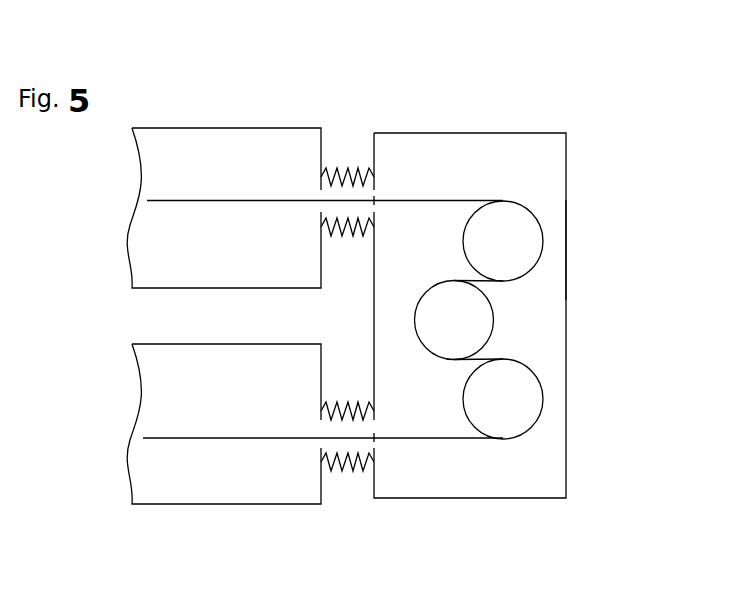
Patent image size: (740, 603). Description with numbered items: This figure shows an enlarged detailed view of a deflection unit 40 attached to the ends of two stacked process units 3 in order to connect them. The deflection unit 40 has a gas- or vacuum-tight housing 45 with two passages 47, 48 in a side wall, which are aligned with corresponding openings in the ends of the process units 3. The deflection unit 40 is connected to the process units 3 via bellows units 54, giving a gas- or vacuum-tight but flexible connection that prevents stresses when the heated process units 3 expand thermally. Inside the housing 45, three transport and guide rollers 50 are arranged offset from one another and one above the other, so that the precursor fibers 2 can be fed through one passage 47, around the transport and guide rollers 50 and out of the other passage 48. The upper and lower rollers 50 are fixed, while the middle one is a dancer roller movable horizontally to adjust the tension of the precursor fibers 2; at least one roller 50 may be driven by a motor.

The precursor fibers 2 is at (227, 200).
The process units 3 is at (174, 122).
The deflection unit 40 is at (577, 158).
The housing 45 is at (567, 220).
The passage 47 is at (374, 440).
The passage 48 is at (375, 199).
The transport and guide rollers 50 is at (500, 215).
The bellows units 54 is at (340, 168).